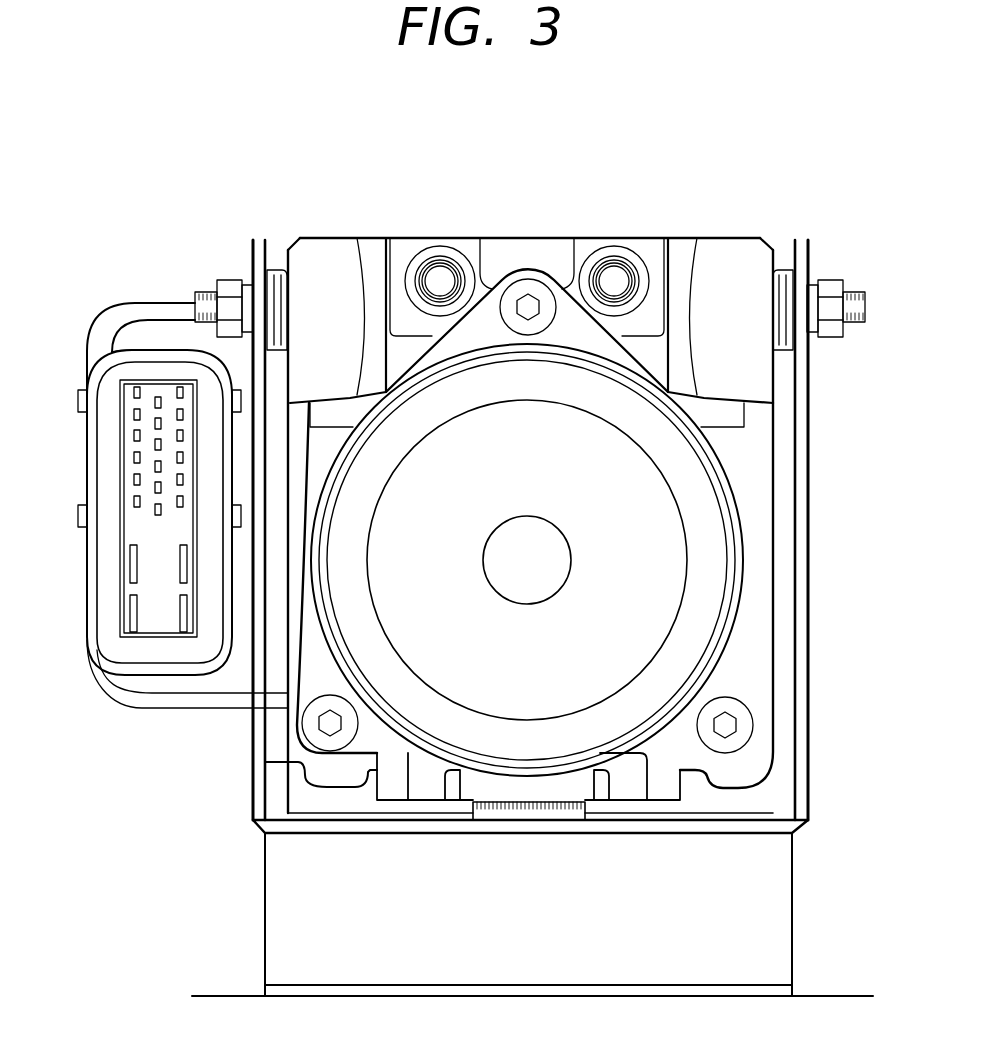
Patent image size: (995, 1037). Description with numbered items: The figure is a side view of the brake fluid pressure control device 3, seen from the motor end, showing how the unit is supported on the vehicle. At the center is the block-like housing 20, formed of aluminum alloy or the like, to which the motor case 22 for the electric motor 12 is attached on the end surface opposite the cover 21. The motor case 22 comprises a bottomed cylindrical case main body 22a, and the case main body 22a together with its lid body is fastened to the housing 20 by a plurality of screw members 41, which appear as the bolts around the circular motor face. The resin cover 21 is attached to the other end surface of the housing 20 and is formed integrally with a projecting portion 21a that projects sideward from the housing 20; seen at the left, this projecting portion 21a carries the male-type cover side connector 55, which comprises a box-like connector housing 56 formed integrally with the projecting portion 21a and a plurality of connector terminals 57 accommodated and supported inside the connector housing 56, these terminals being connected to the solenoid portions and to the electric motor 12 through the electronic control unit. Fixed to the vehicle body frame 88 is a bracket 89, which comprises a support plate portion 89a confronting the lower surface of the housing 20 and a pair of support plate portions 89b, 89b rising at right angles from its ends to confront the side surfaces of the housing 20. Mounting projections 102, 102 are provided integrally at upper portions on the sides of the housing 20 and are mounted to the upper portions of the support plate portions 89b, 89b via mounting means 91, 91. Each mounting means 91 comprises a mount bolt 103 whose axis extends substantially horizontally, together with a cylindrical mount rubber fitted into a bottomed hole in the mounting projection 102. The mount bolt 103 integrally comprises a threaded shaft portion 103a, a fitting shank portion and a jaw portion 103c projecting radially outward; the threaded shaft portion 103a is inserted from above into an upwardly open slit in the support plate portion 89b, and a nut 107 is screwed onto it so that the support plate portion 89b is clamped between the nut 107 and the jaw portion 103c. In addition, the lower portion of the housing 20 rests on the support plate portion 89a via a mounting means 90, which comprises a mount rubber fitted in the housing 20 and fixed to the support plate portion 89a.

The brake fluid pressure control device 3 is at (512, 238).
The electric motor 12 is at (513, 655).
The housing 20 is at (557, 238).
The cover 21 is at (125, 302).
The projecting portion 21a is at (90, 316).
The motor case 22 is at (395, 757).
The case main body 22a is at (453, 728).
The screw members 41 is at (553, 320).
The cover side connector 55 is at (205, 597).
The connector housing 56 is at (153, 678).
The connector terminals 57 is at (183, 560).
The vehicle body frame 88 is at (813, 995).
The bracket 89 is at (247, 893).
The support plate portion 89a is at (467, 827).
The support plate portions 89b is at (253, 667).
The mounting means 90 is at (585, 812).
The mounting means 91 is at (279, 245).
The mounting projections 102 is at (340, 238).
The mount bolt 103 is at (207, 280).
The threaded shaft portion 103a is at (200, 297).
The jaw portion 103c is at (271, 248).
The nut 107 is at (233, 282).